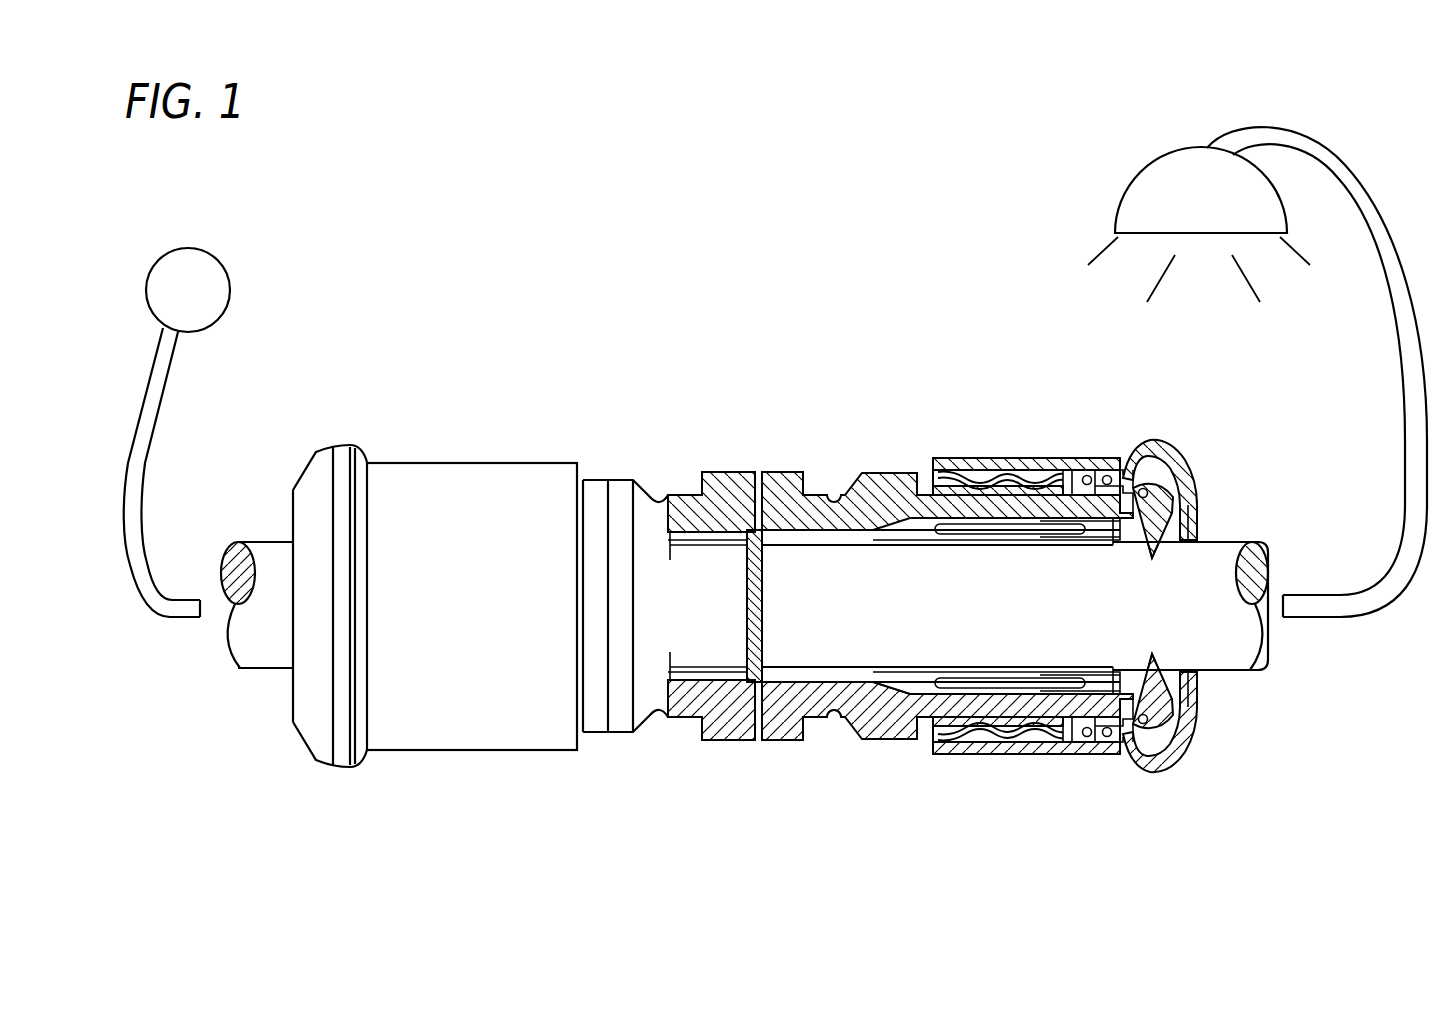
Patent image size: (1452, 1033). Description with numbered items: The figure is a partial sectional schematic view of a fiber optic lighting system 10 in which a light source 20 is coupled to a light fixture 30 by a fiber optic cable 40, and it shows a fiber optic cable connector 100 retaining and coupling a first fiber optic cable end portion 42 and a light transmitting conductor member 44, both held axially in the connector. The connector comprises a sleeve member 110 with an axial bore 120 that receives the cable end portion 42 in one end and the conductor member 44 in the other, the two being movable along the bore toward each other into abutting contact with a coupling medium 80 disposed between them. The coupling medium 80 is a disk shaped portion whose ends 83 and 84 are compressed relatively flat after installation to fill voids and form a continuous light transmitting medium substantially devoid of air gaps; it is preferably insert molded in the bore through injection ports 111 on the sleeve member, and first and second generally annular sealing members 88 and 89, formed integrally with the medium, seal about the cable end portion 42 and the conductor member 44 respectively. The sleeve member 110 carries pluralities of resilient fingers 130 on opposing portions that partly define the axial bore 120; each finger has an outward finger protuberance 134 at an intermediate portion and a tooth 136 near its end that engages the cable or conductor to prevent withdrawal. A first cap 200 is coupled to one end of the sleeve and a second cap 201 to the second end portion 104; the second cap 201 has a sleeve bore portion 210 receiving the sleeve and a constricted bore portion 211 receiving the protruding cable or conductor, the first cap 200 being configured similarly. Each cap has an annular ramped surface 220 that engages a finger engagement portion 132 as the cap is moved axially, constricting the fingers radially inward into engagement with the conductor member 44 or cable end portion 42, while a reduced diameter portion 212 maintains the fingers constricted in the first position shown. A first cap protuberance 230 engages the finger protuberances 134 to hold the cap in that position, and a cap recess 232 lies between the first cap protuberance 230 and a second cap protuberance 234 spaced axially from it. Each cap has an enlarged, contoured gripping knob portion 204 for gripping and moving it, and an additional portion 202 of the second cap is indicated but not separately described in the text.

The tube connection system 10 is at (225, 218).
The light source 20 is at (230, 283).
The light fixture 30 is at (1185, 212).
The fiber optic cable 40 is at (148, 447).
The first fiber optic cable end portion 42 is at (267, 647).
The light transmitting conductor member 44 is at (1250, 637).
The coupling medium 80 is at (752, 510).
The end portion of coupling medium 83 is at (707, 622).
The end portion of coupling medium 84 is at (762, 592).
The first generally annular sealing member 88 is at (718, 498).
The second generally annular sealing member 89 is at (773, 527).
The fiber optic cable connector 100 is at (630, 352).
The second end portion of sleeve member 104 is at (1187, 740).
The sleeve member 110 is at (825, 724).
The injection ports 111 is at (752, 730).
The axial bore 120 is at (880, 668).
The resilient fingers 130 is at (1118, 535).
The finger engagement portion 132 is at (1200, 452).
The finger protuberance 134 is at (1070, 467).
The tooth 136 is at (1155, 655).
The first cap 200 is at (447, 455).
The second cap 201 is at (1212, 518).
The outer ring 202 is at (1200, 468).
The gripping knob portion 204 is at (327, 458).
The sleeve bore portion 210 is at (1085, 465).
The constricted bore portion 211 is at (1223, 673).
The reduced diameter portion 212 is at (1170, 452).
The ramped surface 220 is at (1127, 455).
The first cap protuberance 230 is at (1040, 470).
The cap recess 232 is at (985, 470).
The second cap protuberance 234 is at (960, 473).